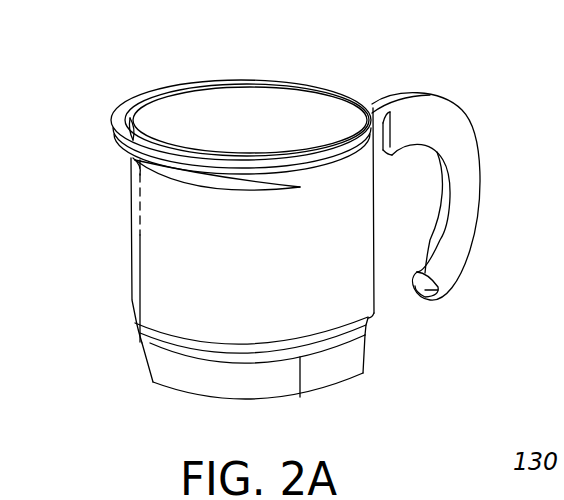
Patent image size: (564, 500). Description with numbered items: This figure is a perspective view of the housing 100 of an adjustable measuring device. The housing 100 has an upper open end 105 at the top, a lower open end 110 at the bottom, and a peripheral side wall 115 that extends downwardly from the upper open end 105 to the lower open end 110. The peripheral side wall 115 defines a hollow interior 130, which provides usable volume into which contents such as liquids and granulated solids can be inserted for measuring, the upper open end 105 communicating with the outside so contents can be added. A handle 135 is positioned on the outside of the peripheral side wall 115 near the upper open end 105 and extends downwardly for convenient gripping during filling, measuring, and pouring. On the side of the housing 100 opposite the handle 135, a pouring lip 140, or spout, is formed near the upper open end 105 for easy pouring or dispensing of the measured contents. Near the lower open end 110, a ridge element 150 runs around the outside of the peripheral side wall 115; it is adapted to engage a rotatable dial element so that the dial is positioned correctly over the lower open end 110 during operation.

The housing 100 is at (378, 302).
The upper open end 105 is at (238, 82).
The lower open end 110 is at (226, 399).
The peripheral side wall 115 is at (130, 263).
The hollow interior 130 is at (280, 107).
The handle 135 is at (468, 122).
The pouring lip 140 is at (130, 113).
The ridge element 150 is at (310, 352).